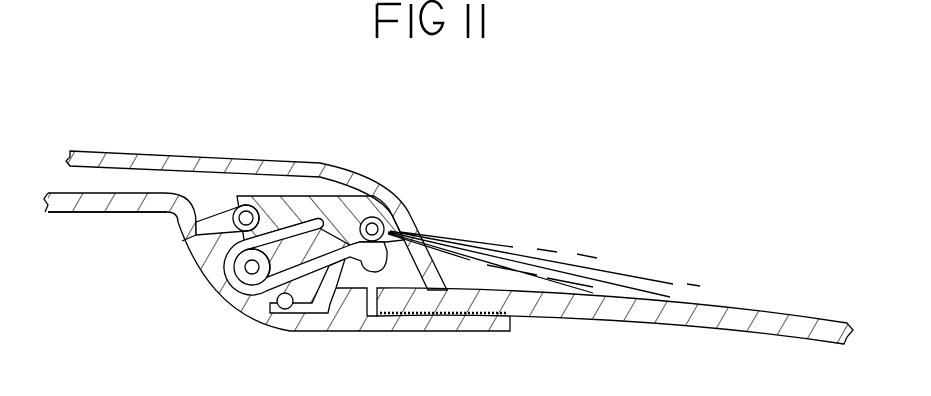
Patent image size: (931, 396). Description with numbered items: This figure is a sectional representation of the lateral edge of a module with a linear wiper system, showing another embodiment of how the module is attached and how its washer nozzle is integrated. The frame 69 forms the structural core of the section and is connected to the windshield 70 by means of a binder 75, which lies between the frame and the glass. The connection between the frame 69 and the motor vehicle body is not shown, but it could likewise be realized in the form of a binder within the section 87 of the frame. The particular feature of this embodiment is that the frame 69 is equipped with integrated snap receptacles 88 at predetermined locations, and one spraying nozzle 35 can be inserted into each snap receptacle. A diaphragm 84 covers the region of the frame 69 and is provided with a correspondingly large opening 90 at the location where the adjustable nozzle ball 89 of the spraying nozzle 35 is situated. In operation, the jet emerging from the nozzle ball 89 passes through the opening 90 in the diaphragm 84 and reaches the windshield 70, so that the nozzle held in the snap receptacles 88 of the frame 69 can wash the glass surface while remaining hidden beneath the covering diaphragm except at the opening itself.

The diaphragm 84 is at (298, 162).
The section 87 is at (116, 218).
The frame 69 is at (243, 308).
The snap receptacles 88 is at (238, 206).
The spraying nozzle 35 is at (360, 208).
The nozzle ball 89 is at (386, 236).
The opening 90 is at (395, 227).
The windshield 70 is at (808, 321).
The binder 75 is at (478, 325).